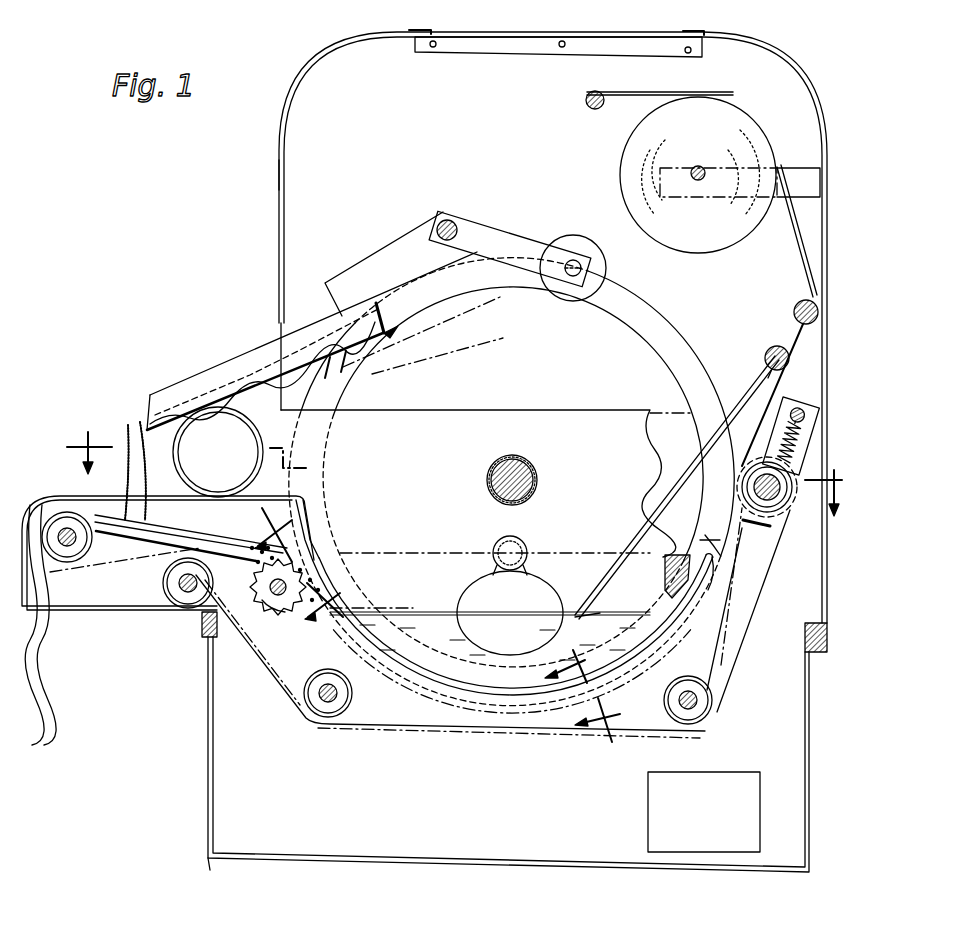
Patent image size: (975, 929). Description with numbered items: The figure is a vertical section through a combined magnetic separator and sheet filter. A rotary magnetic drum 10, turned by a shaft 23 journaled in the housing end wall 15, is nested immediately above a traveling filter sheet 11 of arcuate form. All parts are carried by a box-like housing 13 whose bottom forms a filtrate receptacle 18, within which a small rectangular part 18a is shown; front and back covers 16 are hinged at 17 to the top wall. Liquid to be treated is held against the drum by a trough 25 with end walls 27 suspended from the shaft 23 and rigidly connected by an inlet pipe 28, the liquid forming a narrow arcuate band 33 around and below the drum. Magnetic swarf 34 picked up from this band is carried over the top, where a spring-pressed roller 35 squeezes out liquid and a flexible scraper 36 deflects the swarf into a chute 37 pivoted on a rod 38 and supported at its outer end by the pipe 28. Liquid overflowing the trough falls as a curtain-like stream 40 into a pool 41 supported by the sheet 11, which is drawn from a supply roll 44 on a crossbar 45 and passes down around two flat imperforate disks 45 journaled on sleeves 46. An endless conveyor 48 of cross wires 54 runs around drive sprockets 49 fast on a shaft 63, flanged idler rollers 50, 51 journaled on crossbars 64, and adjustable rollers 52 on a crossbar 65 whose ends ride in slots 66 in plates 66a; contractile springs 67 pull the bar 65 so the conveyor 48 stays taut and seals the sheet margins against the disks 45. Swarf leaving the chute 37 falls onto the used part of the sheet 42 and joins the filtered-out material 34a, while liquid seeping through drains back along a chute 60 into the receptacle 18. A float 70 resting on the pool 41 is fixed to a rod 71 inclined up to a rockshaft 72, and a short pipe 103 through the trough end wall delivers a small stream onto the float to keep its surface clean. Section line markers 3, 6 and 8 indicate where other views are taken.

The rotary magnetic drum 10 is at (636, 346).
The traveling filter sheet 11 is at (726, 558).
The box-like housing 13 is at (305, 862).
The end wall 15 is at (300, 178).
The front and back covers 16 is at (823, 118).
The hinge 17 is at (411, 32).
The receptacle 18 is at (209, 781).
The access box 18a is at (650, 803).
The shaft 23 is at (535, 473).
The trough 25 is at (718, 540).
The end walls 27 is at (629, 420).
The inlet pipe 28 is at (178, 464).
The arcuate band of liquid 33 is at (684, 560).
The swarf 34 is at (130, 466).
The filtered out material 34a is at (215, 522).
The roller 35 is at (586, 247).
The flexible scraper 36 is at (388, 329).
The chute 37 is at (236, 366).
The rod 38 is at (452, 226).
The curtain-like stream 40 is at (711, 578).
The pool 41 is at (620, 612).
The used part of the sheet 42 is at (135, 527).
The supply roll 44 is at (633, 150).
The flat imperforate disks 45 is at (692, 364).
The sleeves 46 is at (539, 489).
The endless flexible conveyor 48 is at (410, 730).
The drive sprockets 49 is at (287, 608).
The flanged idler rollers 50 is at (67, 553).
The flanged idler rollers 51 is at (183, 600).
The adjustable rollers 52 is at (790, 502).
The cross wires 54 is at (262, 556).
The chute 60 is at (161, 536).
The shaft 63 is at (278, 587).
The crossbar 64 is at (78, 545).
The crossbar 65 is at (778, 483).
The slots 66 is at (788, 514).
The plates 66a is at (775, 537).
The contractile springs 67 is at (792, 410).
The float 70 is at (470, 595).
The rod 71 is at (644, 526).
The rockshaft 72 is at (777, 348).
The short pipe 103 is at (500, 549).
The section line 3- 3 is at (454, 465).
The section line 6- 6 is at (585, 696).
The section line 8- 8 is at (304, 560).